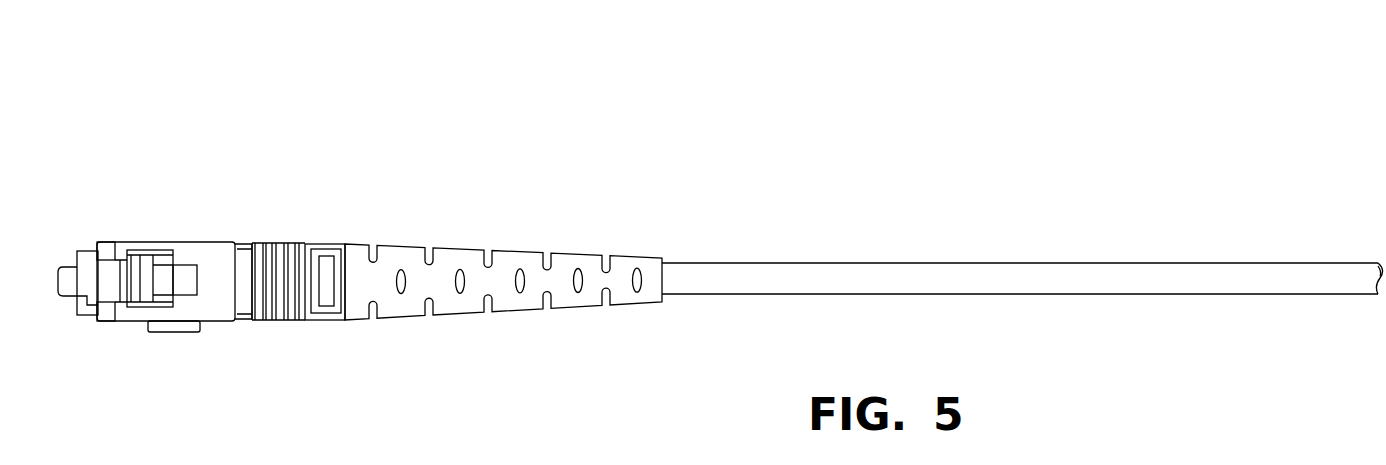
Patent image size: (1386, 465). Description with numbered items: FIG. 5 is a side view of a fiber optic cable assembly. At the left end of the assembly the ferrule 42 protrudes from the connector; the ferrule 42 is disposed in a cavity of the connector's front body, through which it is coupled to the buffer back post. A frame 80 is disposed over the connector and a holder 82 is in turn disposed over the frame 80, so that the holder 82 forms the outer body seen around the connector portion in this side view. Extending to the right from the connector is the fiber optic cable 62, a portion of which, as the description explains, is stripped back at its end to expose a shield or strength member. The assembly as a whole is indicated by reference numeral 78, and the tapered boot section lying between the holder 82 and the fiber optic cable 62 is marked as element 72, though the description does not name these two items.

The ferrule 42 is at (58, 270).
The fiber optic cable 62 is at (818, 262).
The strain relief boot 72 is at (455, 246).
The connector assembly 78 is at (1016, 158).
The frame 80 is at (79, 250).
The holder 82 is at (185, 242).